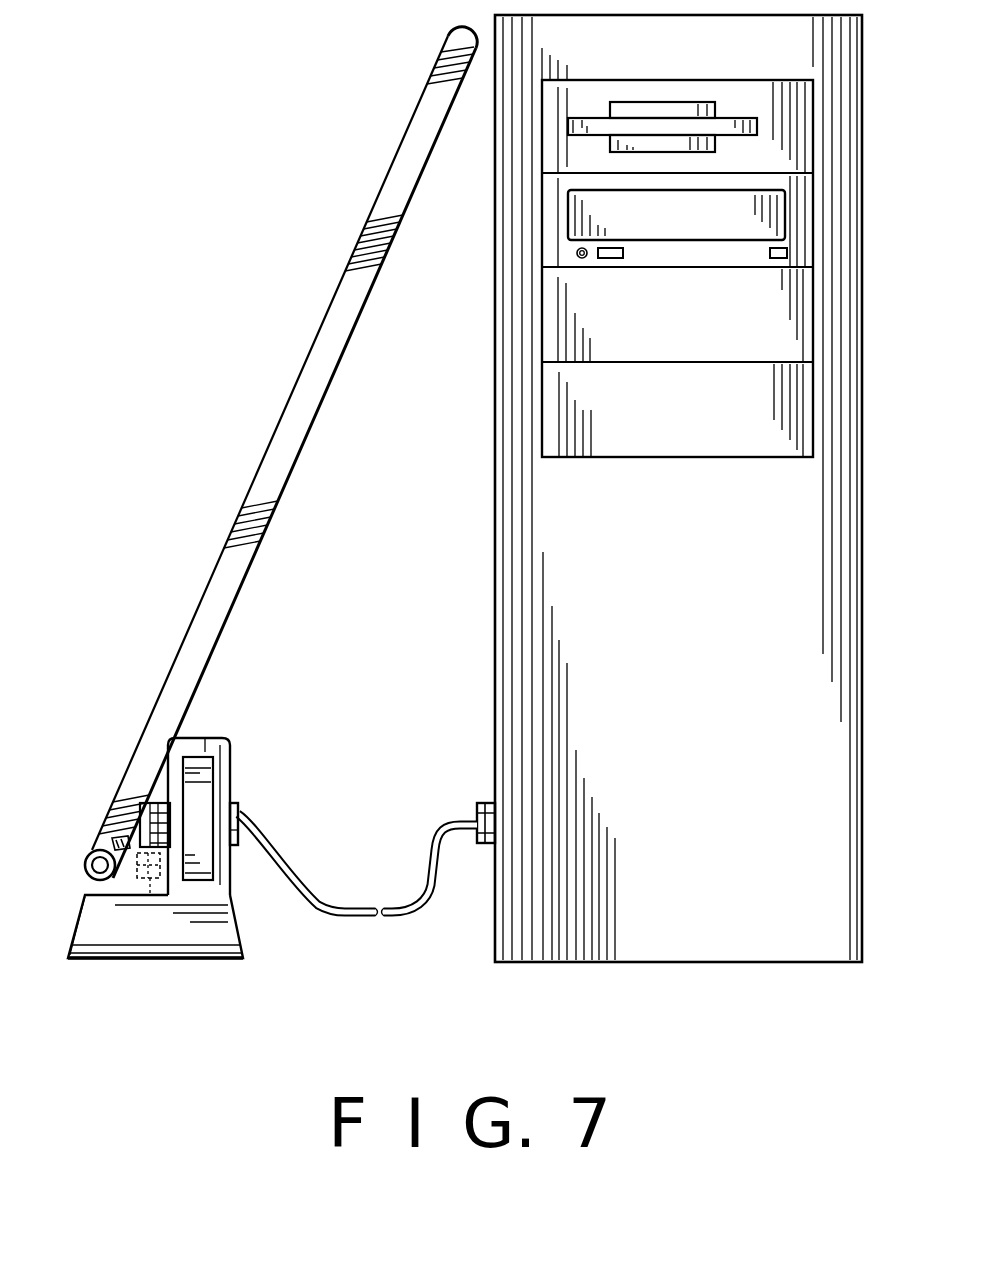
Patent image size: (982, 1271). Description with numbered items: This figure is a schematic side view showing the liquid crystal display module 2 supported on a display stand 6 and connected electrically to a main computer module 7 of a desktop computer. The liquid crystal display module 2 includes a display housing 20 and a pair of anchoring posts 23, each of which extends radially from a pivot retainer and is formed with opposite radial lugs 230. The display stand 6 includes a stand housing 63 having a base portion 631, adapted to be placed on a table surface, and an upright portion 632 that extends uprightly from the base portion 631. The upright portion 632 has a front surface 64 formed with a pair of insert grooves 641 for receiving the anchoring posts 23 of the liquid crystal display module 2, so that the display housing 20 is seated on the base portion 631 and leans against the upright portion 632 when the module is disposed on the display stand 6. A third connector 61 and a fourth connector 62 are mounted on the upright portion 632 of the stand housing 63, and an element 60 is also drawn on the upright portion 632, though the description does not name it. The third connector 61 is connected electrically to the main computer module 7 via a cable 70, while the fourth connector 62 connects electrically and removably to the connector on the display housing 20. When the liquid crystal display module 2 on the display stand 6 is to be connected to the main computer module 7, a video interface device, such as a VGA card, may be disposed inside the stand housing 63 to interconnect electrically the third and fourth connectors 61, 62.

The liquid crystal display module 2 is at (284, 452).
The display housing 20 is at (222, 552).
The anchoring post 23 is at (140, 880).
The radial lug 230 is at (158, 880).
The display stand 6 is at (181, 882).
The slot 60 is at (203, 798).
The third connector 61 is at (240, 808).
The fourth connector 62 is at (135, 806).
The stand housing 63 is at (220, 963).
The base portion 631 is at (95, 935).
The upright portion 632 is at (212, 752).
The front surface 64 is at (96, 852).
The insert groove 641 is at (136, 852).
The main computer module 7 is at (480, 918).
The cable 70 is at (337, 910).